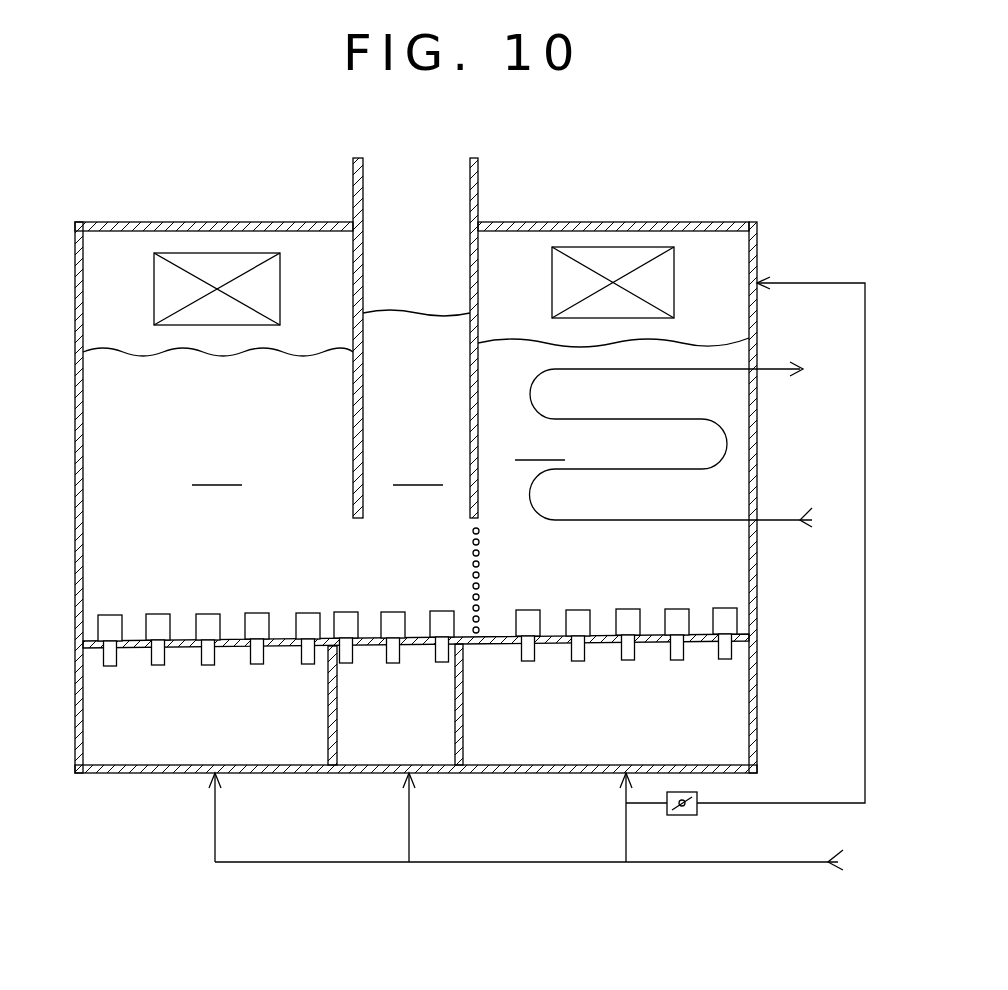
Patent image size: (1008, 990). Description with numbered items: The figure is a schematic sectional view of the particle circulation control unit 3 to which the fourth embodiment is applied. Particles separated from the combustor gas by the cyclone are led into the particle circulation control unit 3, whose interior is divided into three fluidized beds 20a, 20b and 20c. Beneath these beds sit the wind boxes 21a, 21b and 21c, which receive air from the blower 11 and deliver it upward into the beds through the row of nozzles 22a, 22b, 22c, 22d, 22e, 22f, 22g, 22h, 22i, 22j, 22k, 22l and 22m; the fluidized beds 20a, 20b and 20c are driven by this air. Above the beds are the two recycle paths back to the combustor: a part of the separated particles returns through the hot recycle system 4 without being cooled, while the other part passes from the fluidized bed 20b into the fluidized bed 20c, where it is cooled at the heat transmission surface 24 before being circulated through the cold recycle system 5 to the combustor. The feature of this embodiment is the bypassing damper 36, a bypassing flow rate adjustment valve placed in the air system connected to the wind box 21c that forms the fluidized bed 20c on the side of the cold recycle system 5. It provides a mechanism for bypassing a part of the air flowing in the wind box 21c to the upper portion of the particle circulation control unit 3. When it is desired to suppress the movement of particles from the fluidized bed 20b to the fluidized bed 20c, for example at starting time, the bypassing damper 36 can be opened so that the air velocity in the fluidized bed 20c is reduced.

The particle circulation control unit 3 is at (757, 318).
The hot recycle system 4 is at (183, 258).
The cold recycle system 5 is at (595, 255).
The blower 11 is at (790, 862).
The fluidized bed 20a is at (217, 472).
The fluidized bed 20b is at (418, 472).
The fluidized bed 20c is at (540, 447).
The wind box 21a is at (150, 748).
The wind box 21b is at (372, 748).
The wind box 21c is at (565, 748).
The nozzle 22a is at (110, 615).
The nozzle 22b is at (158, 614).
The nozzle 22c is at (208, 614).
The nozzle 22d is at (257, 613).
The nozzle 22e is at (308, 613).
The nozzle 22f is at (346, 612).
The nozzle 22g is at (393, 612).
The nozzle 22h is at (442, 611).
The nozzle 22i is at (528, 610).
The nozzle 22j is at (578, 610).
The nozzle 22k is at (628, 609).
The nozzle 22l is at (677, 609).
The nozzle 22m is at (728, 608).
The heat transmission surface 24 is at (721, 440).
The bypassing damper 36 is at (690, 815).